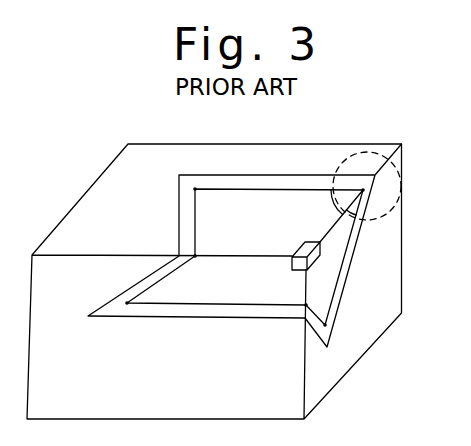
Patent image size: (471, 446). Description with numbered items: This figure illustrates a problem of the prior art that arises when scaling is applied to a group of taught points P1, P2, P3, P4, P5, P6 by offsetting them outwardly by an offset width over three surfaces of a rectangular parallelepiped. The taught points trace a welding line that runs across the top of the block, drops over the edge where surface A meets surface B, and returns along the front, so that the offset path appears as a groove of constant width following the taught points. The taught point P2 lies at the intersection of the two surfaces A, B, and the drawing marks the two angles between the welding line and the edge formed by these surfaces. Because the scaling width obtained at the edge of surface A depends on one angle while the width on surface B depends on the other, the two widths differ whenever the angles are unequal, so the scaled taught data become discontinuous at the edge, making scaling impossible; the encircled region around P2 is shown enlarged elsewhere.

The surface A is at (372, 145).
The surface B is at (402, 262).
The taught point P1 is at (205, 200).
The taught point P2 is at (349, 200).
The taught point P3 is at (319, 308).
The taught point P4 is at (296, 295).
The taught point P5 is at (148, 295).
The taught point P6 is at (204, 268).